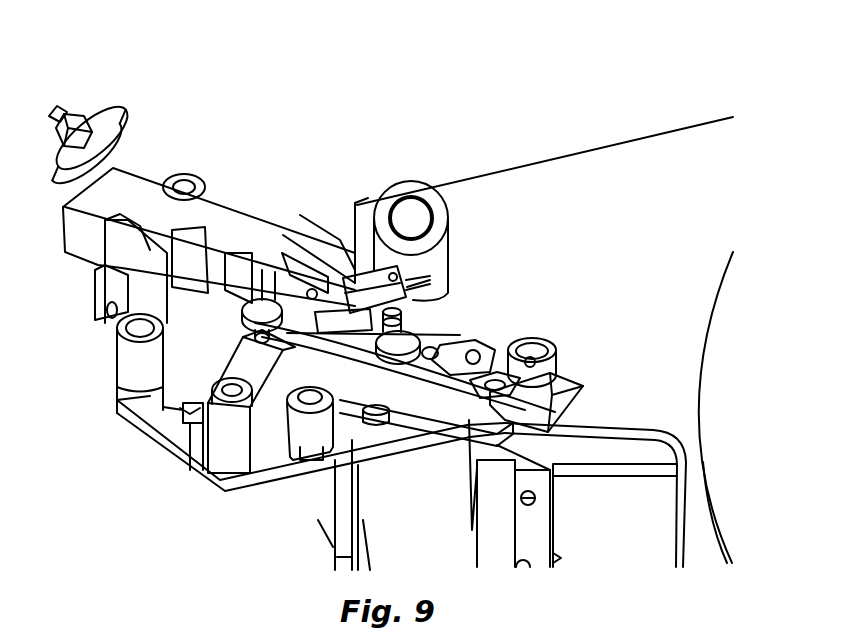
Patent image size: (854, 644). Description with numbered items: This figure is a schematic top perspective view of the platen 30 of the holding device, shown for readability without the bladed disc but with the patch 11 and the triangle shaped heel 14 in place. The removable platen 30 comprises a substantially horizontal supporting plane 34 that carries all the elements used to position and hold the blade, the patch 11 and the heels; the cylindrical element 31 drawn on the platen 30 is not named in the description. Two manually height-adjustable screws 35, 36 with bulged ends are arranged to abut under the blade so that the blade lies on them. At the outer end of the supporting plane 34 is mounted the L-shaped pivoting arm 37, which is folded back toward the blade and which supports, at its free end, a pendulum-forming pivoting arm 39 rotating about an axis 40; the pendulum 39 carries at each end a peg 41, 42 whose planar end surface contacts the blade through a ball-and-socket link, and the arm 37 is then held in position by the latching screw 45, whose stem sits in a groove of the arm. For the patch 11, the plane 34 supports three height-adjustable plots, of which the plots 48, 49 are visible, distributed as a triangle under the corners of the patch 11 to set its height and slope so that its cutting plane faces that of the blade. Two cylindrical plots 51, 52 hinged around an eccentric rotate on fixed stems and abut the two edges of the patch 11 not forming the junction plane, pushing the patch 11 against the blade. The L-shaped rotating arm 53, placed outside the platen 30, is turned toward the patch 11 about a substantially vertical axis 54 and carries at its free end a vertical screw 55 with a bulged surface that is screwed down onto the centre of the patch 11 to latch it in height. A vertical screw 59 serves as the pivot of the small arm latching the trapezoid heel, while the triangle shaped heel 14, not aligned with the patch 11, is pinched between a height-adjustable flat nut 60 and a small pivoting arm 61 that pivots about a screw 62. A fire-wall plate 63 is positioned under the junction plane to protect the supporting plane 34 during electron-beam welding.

The patch 11 is at (175, 428).
The triangle shaped heel 14 is at (483, 352).
The platen 30 is at (274, 84).
The cylinder 31 is at (412, 207).
The supporting plane 34 is at (183, 420).
The screw 35 is at (412, 338).
The screw 36 is at (336, 300).
The pivoting arm 37 is at (207, 198).
The pendulum-forming pivoting arm 39 is at (331, 240).
The axis 40 is at (333, 266).
The peg 41 is at (420, 322).
The peg 42 is at (309, 290).
The screw 45 is at (125, 113).
The plot 48 is at (388, 412).
The plot 49 is at (195, 418).
The plot hinged around an eccentric 51 is at (303, 433).
The plot hinged around an eccentric 52 is at (133, 367).
The rotating arm 53 is at (230, 450).
The axis 54 is at (207, 410).
The screw 55 is at (258, 268).
The vertical screw 59 is at (172, 182).
The flat nut 60 is at (555, 411).
The small pivoting arm 61 is at (500, 360).
The screw 62 is at (552, 346).
The fire-wall plate 63 is at (467, 407).